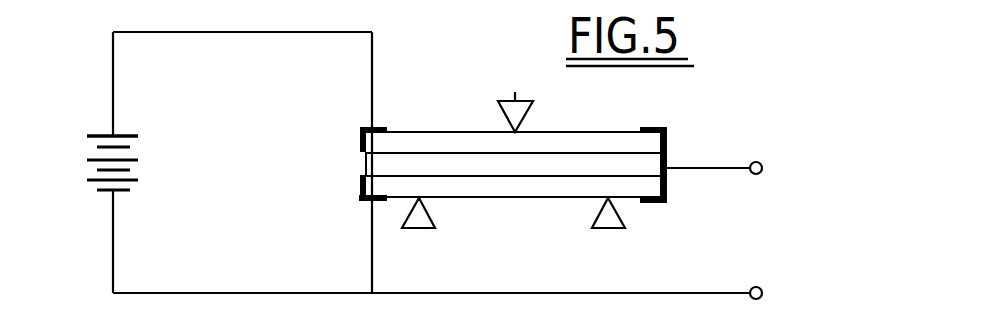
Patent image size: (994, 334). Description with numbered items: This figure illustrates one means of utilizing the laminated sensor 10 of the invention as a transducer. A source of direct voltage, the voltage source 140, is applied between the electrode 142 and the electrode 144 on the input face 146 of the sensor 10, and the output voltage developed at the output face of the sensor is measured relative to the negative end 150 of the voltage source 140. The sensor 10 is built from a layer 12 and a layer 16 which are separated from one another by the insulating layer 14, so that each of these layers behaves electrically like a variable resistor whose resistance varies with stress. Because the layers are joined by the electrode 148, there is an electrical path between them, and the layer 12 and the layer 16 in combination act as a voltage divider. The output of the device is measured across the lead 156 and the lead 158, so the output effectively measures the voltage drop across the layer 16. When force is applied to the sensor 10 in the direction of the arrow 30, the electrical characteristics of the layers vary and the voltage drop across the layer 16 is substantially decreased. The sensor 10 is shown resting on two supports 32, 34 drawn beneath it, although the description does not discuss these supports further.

The laminated sensor 10 is at (566, 120).
The layer 12 is at (661, 128).
The insulating layer 14 is at (646, 184).
The layer 16 is at (650, 205).
The arrow 30 is at (500, 110).
The left support 32 is at (435, 217).
The right support 34 is at (592, 218).
The voltage source 140 is at (102, 193).
The electrode 142 is at (360, 196).
The electrode 144 is at (360, 136).
The input face 146 is at (366, 163).
The electrode 148 is at (649, 138).
The negative end 150 is at (112, 133).
The lead 156 is at (763, 294).
The lead 158 is at (762, 173).